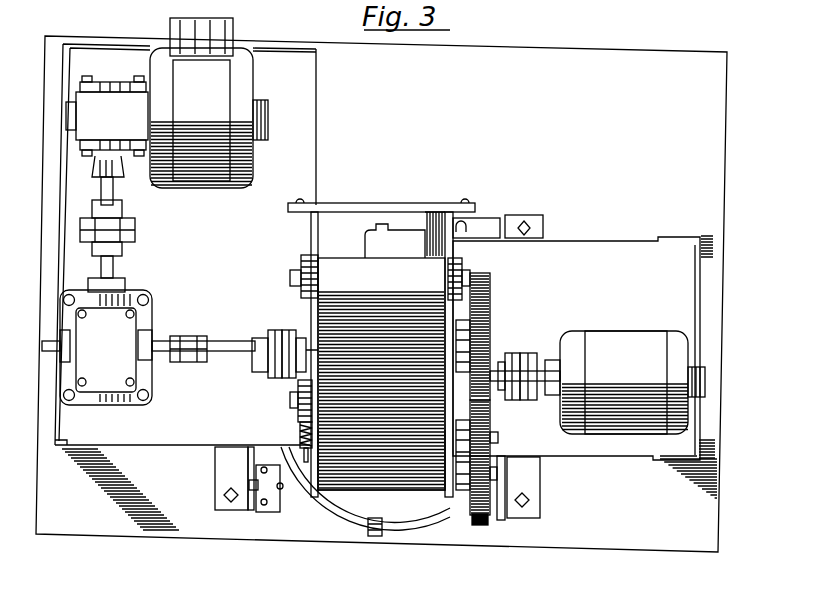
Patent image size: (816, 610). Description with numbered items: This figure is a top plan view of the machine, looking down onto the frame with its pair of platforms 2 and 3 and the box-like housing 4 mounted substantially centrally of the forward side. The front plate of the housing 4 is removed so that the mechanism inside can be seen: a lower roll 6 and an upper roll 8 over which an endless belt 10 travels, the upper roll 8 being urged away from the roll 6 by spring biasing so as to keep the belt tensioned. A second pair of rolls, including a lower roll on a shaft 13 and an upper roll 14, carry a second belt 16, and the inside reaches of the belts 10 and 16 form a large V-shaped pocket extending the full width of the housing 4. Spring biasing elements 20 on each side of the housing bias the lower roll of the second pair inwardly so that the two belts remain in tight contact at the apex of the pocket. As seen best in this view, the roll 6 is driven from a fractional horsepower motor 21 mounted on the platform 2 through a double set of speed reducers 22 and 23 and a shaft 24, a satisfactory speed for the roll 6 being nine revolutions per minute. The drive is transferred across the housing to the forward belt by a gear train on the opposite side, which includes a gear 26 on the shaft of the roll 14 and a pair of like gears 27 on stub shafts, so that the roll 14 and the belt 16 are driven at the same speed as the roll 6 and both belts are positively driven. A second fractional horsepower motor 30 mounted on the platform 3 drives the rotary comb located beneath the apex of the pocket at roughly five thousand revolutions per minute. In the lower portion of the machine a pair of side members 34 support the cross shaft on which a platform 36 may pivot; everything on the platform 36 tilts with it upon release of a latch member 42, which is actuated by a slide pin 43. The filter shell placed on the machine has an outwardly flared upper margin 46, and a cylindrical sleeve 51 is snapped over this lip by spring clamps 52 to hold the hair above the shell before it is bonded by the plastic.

The platform 2 is at (302, 137).
The platform 3 is at (578, 257).
The box-like housing 4 is at (323, 230).
The lower roll 6 is at (308, 335).
The upper roll 8 is at (461, 268).
The endless belt 10 is at (388, 277).
The shaft 13 is at (297, 395).
The upper roll 14 is at (467, 487).
The second belt 16 is at (412, 440).
The spring biasing elements 20 is at (298, 431).
The fractional horsepower motor 21 is at (240, 90).
The speed reducer 22 is at (83, 118).
The speed reducer 23 is at (118, 330).
The shaft 24 is at (216, 343).
The gear 26 is at (481, 519).
The pair of like gears 27 is at (488, 307).
The fractional horsepower motor 30 is at (608, 340).
The side members 34 is at (249, 470).
The platform 36 is at (462, 505).
The latch member 42 is at (253, 488).
The slide pin 43 is at (280, 490).
The outwardly flared upper margin 46 is at (397, 527).
The cylindrical sleeve 51 is at (358, 520).
The spring clamps 52 is at (375, 536).